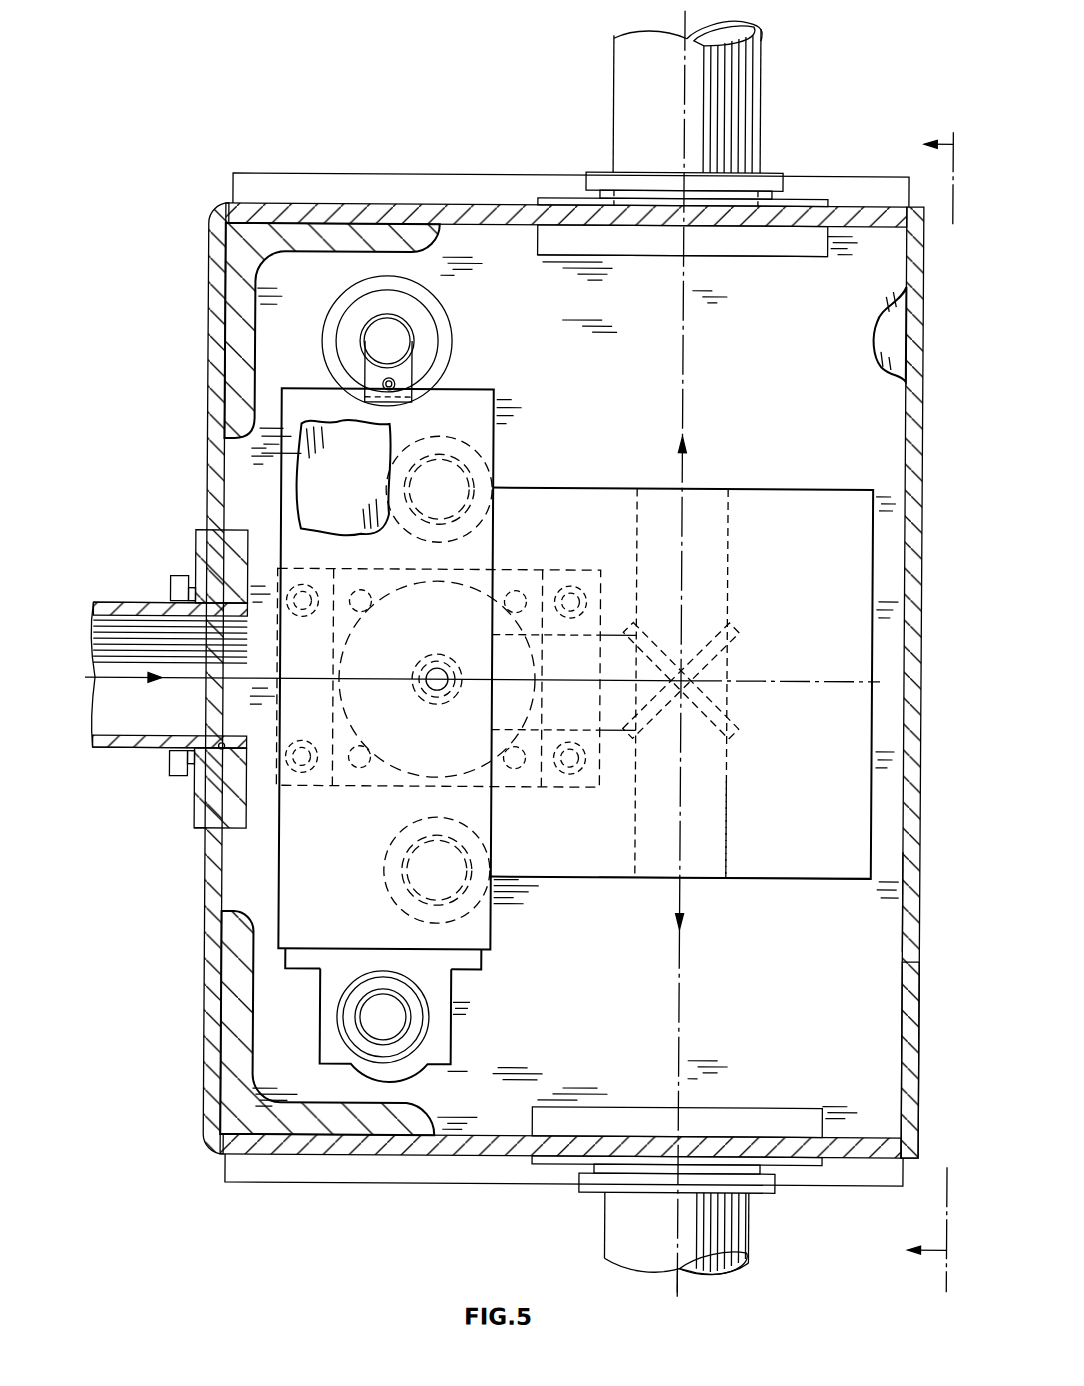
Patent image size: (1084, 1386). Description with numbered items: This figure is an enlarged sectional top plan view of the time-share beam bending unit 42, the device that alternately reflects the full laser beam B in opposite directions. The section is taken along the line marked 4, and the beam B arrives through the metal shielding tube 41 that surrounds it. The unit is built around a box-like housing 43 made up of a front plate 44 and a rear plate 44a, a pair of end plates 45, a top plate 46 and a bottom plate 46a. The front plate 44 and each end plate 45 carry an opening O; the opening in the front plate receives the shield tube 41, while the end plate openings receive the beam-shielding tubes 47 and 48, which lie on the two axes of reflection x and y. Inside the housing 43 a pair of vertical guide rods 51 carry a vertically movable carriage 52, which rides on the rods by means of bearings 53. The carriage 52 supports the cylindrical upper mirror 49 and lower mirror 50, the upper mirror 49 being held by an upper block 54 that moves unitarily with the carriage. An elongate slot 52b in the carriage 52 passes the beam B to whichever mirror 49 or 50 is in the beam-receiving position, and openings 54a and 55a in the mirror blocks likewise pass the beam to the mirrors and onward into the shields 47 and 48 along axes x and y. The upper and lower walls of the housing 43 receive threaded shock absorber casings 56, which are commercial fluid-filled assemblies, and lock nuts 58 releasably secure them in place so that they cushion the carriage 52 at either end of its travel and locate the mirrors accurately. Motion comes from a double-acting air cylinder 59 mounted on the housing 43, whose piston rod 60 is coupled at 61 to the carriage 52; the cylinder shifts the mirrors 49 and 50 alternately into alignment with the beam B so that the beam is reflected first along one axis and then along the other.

The section line 4- 4 is at (947, 711).
The metal shielding tube 41 is at (132, 752).
The time-share beam bending unit 42 is at (745, 892).
The box-like housing 43 is at (928, 1000).
The front plate 44 is at (205, 888).
The rear plate 44a is at (911, 895).
The end plates 45 is at (432, 215).
The top plate 46 is at (350, 476).
The bottom plate 46a is at (766, 334).
The beam-shielding tube 47 is at (616, 1232).
The beam-shielding tube 48 is at (752, 118).
The upper mirror 49 is at (650, 732).
The lower mirror 50 is at (640, 628).
The vertical guide rods 51 is at (406, 342).
The carriage 52 is at (486, 930).
The elongate slot 52b is at (730, 560).
The bearings 53 is at (440, 368).
The upper block 54 is at (786, 613).
The opening 54a is at (610, 635).
The opening 55a is at (722, 782).
The shock absorber casings 56 is at (460, 463).
The lock nuts 58 is at (496, 468).
The double-acting air cylinder 59 is at (418, 782).
The piston rod 60 is at (437, 693).
The coupling 61 is at (415, 672).
The laser beam B is at (118, 684).
The opening O is at (220, 752).
The axis of reflection x is at (705, 1278).
The axis of reflection y is at (683, 32).